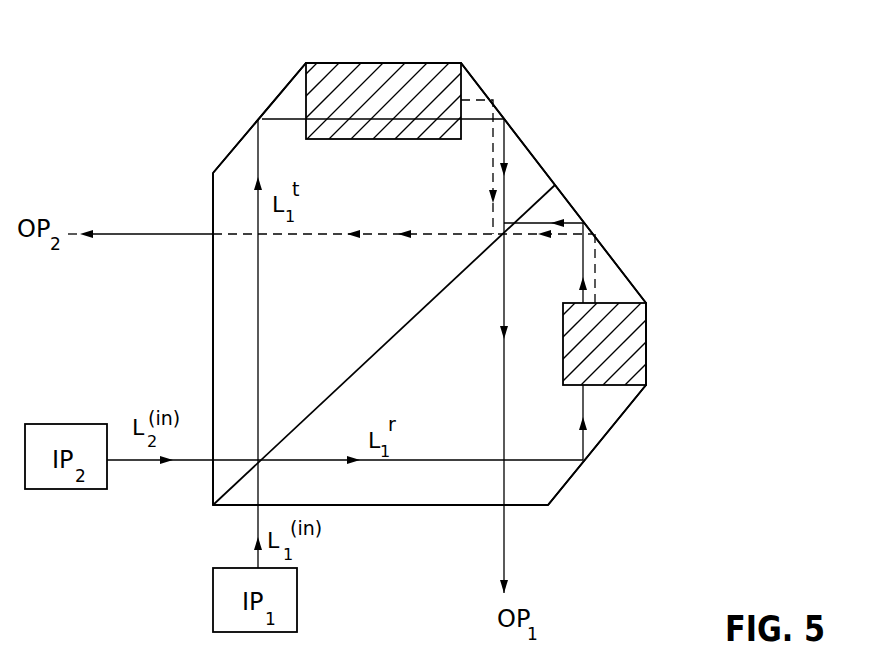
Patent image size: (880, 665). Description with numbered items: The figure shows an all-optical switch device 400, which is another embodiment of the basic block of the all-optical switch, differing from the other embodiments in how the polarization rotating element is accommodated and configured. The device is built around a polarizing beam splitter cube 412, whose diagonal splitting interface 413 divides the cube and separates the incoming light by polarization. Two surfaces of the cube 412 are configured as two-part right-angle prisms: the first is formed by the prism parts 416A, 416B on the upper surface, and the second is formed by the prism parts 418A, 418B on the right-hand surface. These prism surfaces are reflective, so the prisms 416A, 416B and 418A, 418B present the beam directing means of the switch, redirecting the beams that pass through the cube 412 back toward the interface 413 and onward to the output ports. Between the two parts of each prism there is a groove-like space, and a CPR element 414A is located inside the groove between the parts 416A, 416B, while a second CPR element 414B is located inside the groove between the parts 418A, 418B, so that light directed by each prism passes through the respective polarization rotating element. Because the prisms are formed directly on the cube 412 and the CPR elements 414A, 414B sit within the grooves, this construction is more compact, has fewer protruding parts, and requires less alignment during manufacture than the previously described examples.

The all-optical switch device 400 is at (222, 120).
The polarizing beam splitter cube 412 is at (229, 218).
The polarizing beam splitting interface 413 is at (318, 397).
The CPR element 414A is at (371, 62).
The CPR element 414B is at (647, 331).
The two-part right-angle prism part 416A is at (287, 88).
The two-part right-angle prism part 416B is at (477, 84).
The two-part right-angle prism part 418A is at (625, 281).
The two-part right-angle prism part 418B is at (600, 442).